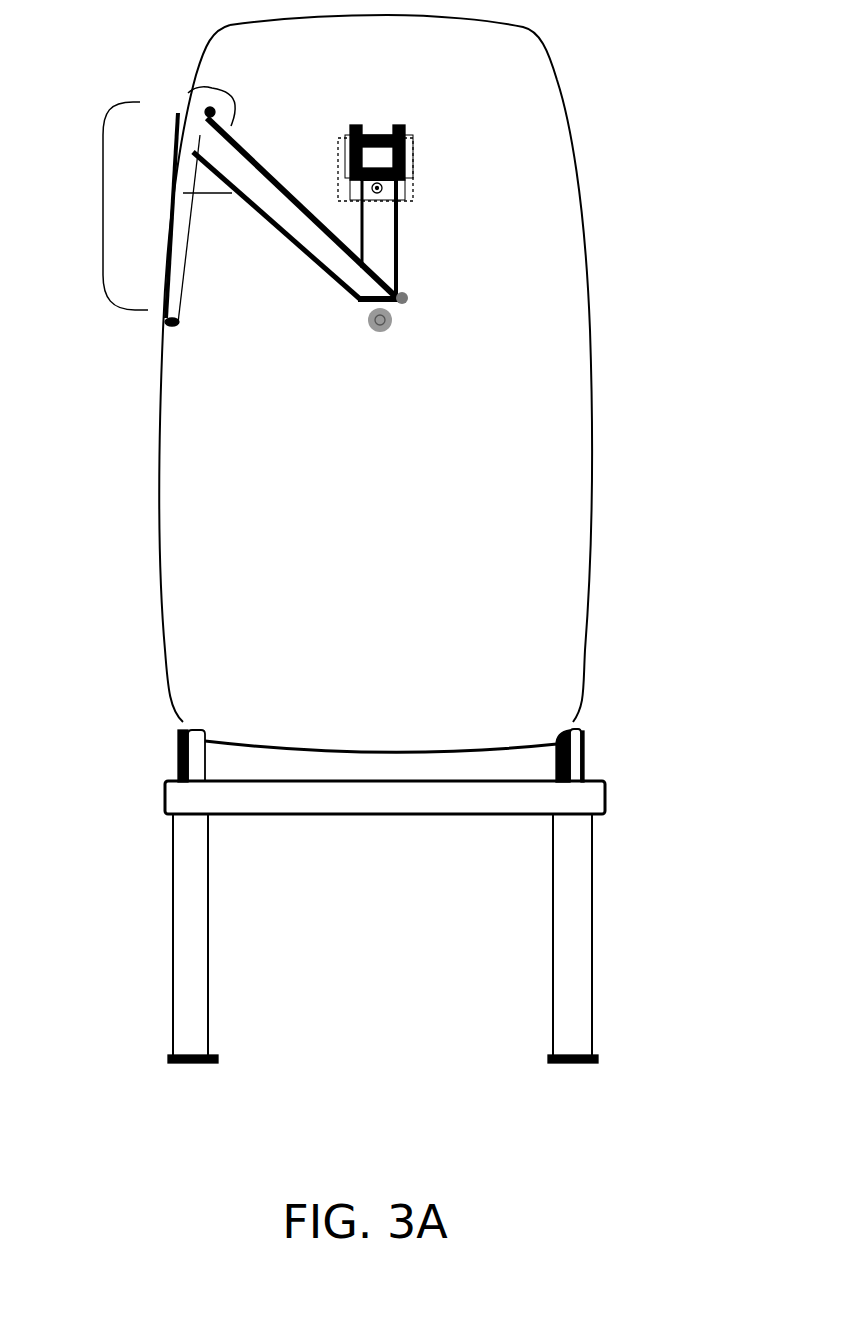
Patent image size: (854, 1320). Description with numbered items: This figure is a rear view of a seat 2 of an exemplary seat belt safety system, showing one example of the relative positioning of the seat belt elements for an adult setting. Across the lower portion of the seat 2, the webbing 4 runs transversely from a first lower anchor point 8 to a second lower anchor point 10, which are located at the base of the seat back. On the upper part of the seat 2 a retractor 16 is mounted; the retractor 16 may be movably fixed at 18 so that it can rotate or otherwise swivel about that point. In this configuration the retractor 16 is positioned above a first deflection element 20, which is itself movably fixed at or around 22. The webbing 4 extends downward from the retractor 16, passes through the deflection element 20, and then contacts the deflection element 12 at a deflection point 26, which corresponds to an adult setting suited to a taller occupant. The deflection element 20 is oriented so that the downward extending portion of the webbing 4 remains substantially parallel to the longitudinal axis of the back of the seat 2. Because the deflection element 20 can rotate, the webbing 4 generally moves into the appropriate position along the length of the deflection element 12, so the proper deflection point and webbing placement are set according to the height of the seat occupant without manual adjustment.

The seat 2 is at (158, 433).
The webbing 4 is at (388, 235).
The first lower anchor point 8 is at (175, 770).
The second lower anchor point 10 is at (598, 750).
The deflection element 12 is at (102, 200).
The retractor 16 is at (416, 152).
The movable fixing point of retractor 18 is at (338, 162).
The first deflection element 20 is at (408, 298).
The movable fixing point of first deflection element 22 is at (374, 334).
The deflection point 26 is at (197, 137).